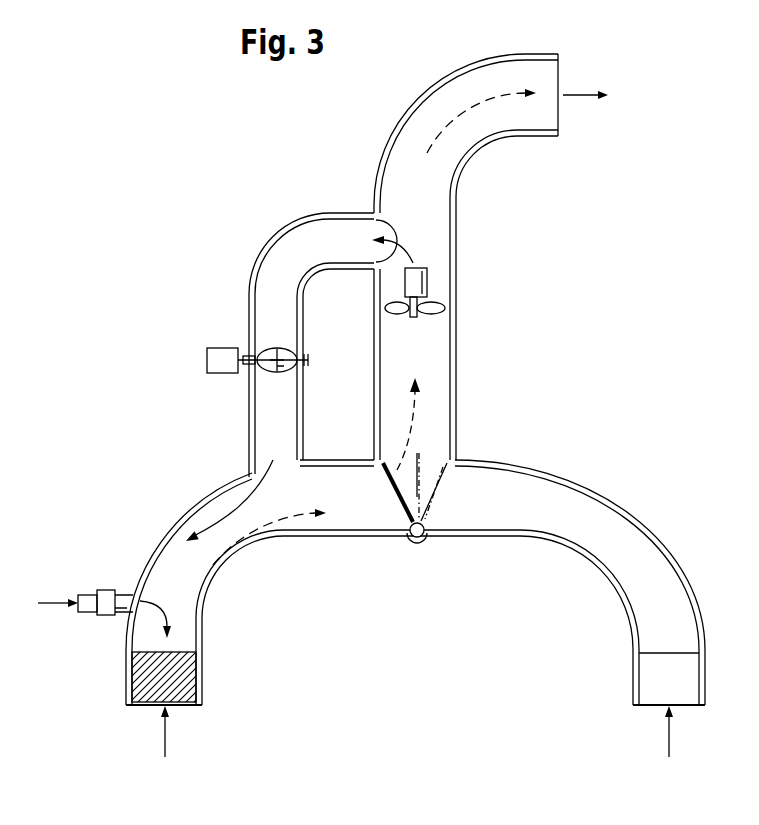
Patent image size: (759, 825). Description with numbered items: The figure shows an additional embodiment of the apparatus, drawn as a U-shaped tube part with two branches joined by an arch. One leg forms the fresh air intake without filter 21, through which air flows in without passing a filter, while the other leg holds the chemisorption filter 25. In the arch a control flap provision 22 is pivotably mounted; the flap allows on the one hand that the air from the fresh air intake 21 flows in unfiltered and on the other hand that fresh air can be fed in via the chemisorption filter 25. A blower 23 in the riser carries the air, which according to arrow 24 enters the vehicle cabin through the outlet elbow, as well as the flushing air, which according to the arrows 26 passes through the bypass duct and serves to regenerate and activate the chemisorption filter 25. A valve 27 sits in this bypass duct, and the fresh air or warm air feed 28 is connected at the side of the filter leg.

The fresh air intake without filter 21 is at (666, 738).
The control flap provision 22 is at (410, 522).
The blower 23 is at (414, 290).
The arrow 24 is at (582, 94).
The chemisorption filter 25 is at (153, 682).
The arrows 26 is at (406, 243).
The valve 27 is at (263, 350).
The fresh air or warm air feed 28 is at (103, 612).